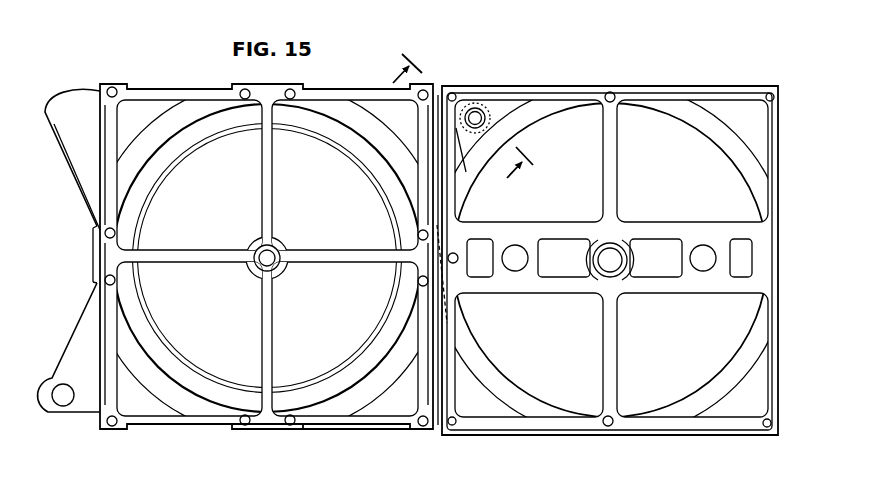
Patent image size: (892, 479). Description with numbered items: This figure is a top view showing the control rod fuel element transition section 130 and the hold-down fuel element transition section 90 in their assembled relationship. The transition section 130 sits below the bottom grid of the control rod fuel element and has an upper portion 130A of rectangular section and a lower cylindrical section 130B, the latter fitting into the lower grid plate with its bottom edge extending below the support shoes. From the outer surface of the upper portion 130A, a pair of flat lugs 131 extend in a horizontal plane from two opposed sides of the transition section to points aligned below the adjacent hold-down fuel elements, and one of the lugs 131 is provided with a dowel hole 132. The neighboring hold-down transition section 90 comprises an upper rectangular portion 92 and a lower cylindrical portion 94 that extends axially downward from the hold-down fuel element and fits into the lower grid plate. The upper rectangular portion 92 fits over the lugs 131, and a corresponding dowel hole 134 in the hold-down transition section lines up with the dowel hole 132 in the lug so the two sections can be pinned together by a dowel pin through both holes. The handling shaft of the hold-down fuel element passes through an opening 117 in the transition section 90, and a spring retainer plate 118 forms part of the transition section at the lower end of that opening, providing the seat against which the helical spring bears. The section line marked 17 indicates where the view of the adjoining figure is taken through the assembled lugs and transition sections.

The transition section 130 is at (182, 72).
The upper portion 130A is at (357, 427).
The lower cylindrical section 130B is at (302, 140).
The flat lugs 131 is at (53, 124).
The dowel hole 132 is at (62, 404).
The section line for FIG. 17 is at (470, 111).
The dowel hole 134 is at (473, 114).
The hold-down transition section 90 is at (584, 83).
The upper rectangular portion 92 is at (609, 244).
The lower cylindrical portion 94 is at (719, 148).
The opening 117 is at (610, 252).
The spring retainer plate 118 is at (619, 277).